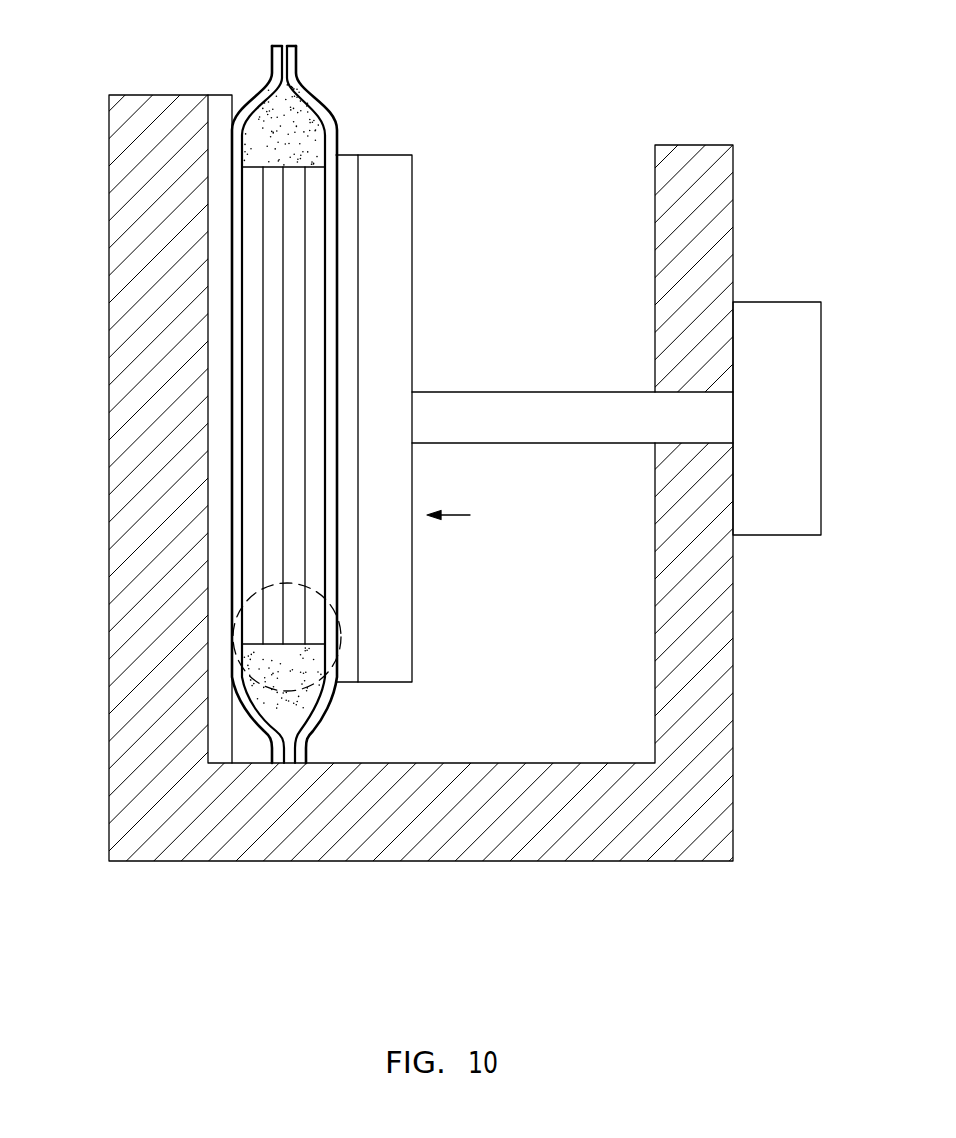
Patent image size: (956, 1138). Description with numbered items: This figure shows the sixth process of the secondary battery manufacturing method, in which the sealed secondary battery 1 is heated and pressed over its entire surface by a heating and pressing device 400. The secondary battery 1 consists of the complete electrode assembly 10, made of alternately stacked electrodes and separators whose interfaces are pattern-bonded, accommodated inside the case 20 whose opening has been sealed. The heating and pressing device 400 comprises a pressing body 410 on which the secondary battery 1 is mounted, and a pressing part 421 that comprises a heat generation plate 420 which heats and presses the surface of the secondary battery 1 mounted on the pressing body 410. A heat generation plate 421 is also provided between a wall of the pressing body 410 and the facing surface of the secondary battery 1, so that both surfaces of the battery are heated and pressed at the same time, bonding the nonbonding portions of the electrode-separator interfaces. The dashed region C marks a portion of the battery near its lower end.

The secondary battery 1 is at (194, 388).
The electrode assembly 10 is at (242, 245).
The case 20 is at (236, 356).
The corner portion C is at (233, 614).
The heating and pressing device 400 is at (268, 945).
The pressing body 410 is at (280, 815).
The heat generation plate 420 is at (387, 675).
The pressing part 421 is at (222, 732).